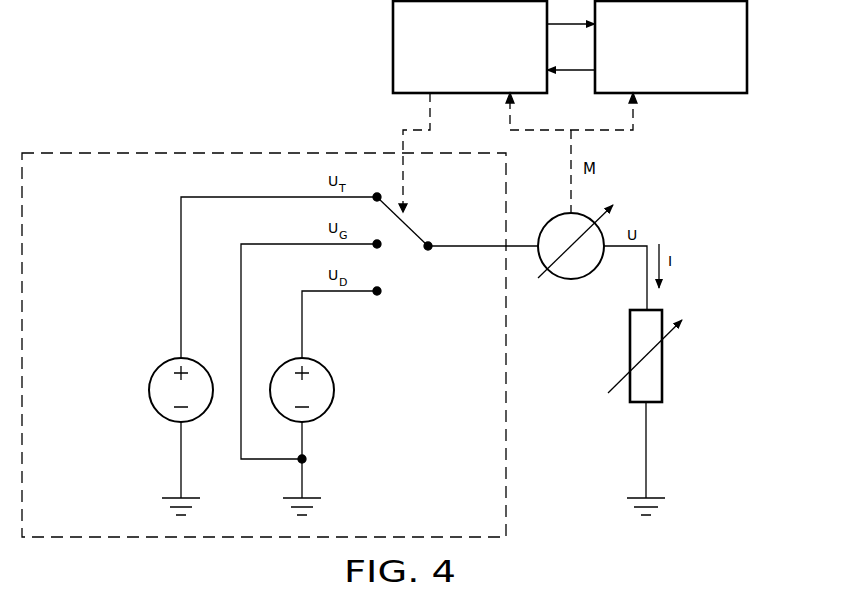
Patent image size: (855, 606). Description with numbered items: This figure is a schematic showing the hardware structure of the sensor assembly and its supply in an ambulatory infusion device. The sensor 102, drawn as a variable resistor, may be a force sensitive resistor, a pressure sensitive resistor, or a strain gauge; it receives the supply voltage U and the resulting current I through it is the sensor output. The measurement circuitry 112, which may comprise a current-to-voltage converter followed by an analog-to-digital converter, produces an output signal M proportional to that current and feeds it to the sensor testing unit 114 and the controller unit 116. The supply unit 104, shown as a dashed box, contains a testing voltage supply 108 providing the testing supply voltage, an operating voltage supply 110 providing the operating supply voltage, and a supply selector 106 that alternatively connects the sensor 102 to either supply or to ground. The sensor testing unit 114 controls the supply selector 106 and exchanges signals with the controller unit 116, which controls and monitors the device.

The sensor 102 is at (662, 371).
The supply unit 104 is at (506, 358).
The supply selector 106 is at (382, 324).
The testing voltage supply 108 is at (151, 384).
The operating voltage supply 110 is at (334, 383).
The measurement circuitry 112 is at (571, 279).
The sensor testing unit 114 is at (393, 50).
The controller unit 116 is at (747, 48).